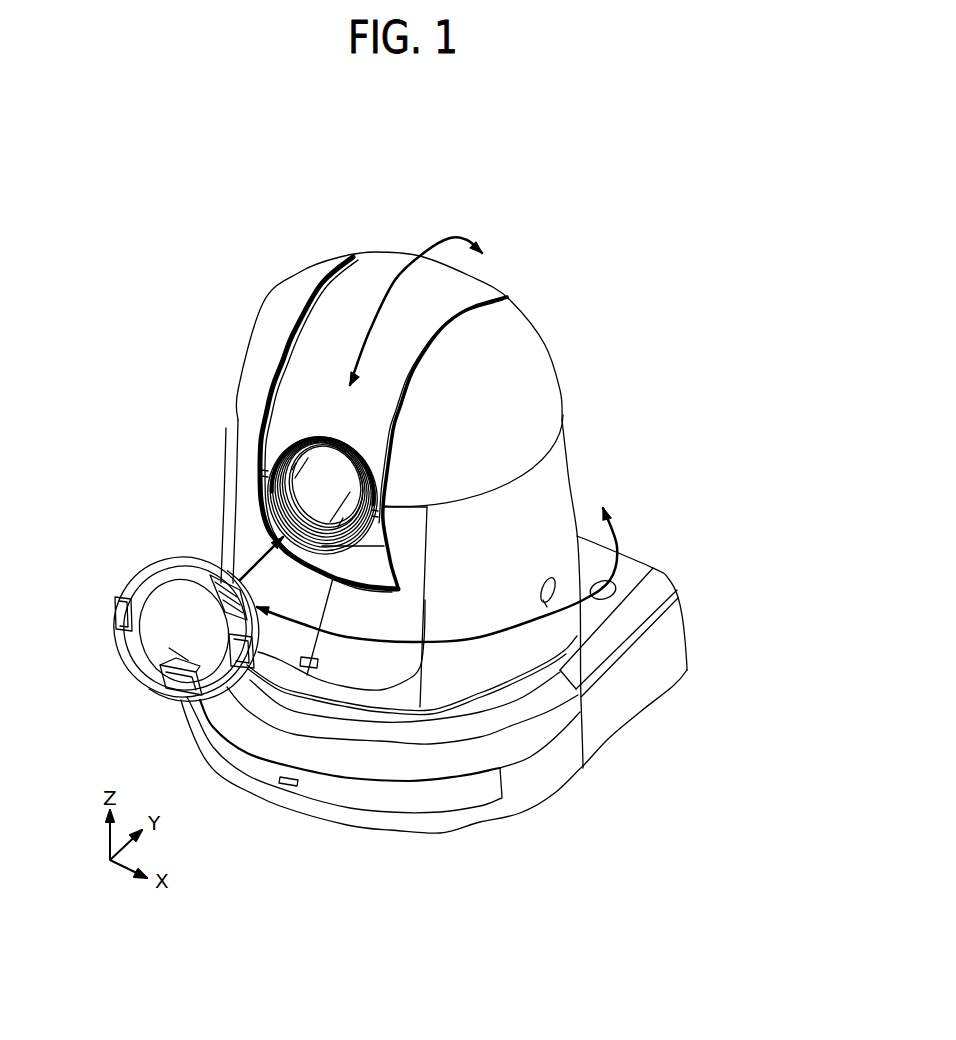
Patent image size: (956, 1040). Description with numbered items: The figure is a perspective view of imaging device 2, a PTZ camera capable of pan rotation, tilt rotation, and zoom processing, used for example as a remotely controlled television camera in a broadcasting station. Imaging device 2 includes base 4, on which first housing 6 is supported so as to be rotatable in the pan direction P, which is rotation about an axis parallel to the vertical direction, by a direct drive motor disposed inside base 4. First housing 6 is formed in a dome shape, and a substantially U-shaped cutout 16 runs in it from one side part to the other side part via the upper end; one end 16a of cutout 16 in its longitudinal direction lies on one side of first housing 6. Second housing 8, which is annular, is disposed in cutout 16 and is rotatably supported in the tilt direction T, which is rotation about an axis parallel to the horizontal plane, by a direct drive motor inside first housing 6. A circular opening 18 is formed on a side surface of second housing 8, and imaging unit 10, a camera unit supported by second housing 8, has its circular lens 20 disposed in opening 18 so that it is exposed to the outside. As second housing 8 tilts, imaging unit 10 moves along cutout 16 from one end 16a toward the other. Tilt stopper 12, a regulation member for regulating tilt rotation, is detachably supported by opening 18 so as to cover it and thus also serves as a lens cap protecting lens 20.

The imaging device 2 is at (585, 232).
The base 4 is at (623, 713).
The first housing 6 is at (557, 480).
The second housing 8 is at (377, 267).
The imaging unit 10 is at (312, 433).
The tilt stopper 12 is at (157, 575).
The cutout 16 is at (327, 287).
The one end of the cutout 16a is at (352, 563).
The circular opening 18 is at (310, 503).
The lens 20 is at (305, 488).
The tilt direction T is at (462, 232).
The pan direction P is at (617, 537).